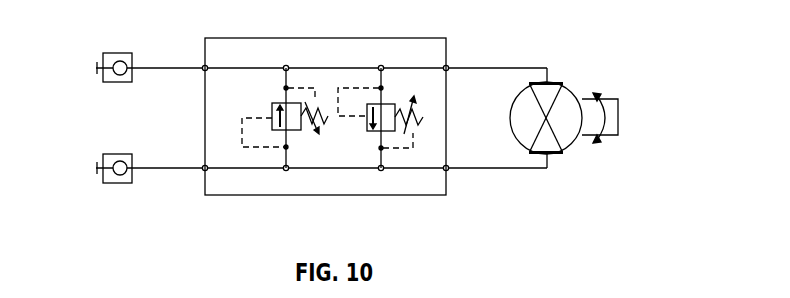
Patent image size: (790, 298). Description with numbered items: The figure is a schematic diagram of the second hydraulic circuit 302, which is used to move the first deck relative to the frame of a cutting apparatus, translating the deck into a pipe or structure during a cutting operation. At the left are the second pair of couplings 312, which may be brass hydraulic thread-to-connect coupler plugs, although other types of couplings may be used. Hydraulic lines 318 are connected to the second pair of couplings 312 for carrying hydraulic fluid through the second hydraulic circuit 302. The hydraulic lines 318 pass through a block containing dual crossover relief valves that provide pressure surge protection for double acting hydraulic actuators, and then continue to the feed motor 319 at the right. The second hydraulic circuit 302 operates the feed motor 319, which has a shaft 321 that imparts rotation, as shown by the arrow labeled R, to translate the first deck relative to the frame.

The second hydraulic circuit 302 is at (708, 127).
The second pair of couplings 312 is at (105, 82).
The hydraulic lines 318 is at (492, 63).
The feed motor 319 is at (553, 78).
The shaft 321 is at (620, 112).